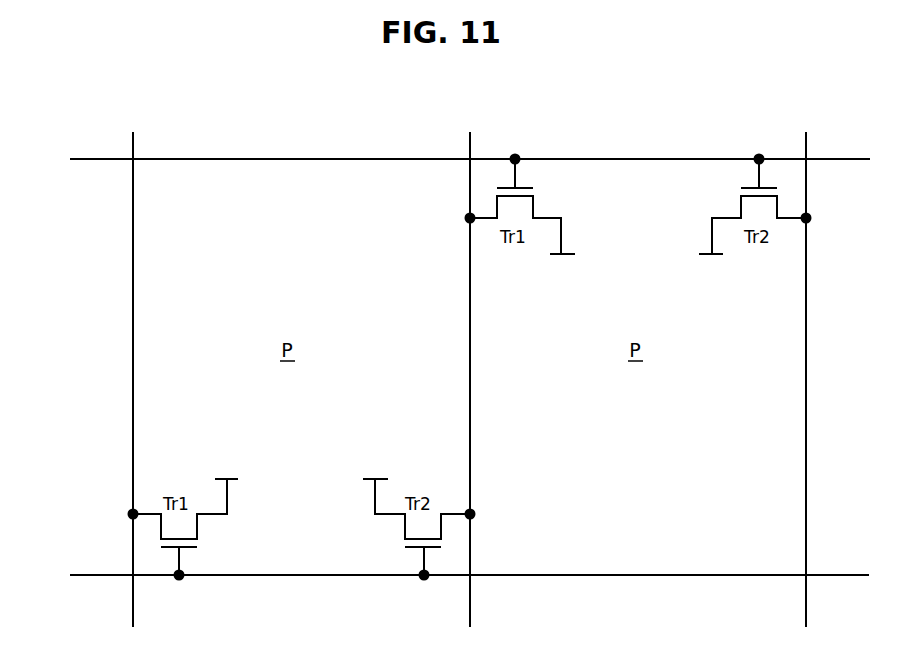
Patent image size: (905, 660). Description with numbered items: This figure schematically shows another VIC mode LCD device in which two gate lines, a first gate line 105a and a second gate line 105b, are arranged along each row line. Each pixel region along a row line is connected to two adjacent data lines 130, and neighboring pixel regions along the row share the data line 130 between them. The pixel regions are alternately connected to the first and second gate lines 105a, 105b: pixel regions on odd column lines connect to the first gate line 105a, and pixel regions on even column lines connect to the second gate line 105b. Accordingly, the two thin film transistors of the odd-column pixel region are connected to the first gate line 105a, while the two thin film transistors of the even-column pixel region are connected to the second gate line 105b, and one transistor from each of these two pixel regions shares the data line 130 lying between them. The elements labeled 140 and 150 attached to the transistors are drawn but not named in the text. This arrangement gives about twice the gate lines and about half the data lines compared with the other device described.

The data line 130 is at (469, 366).
The first gate line 105a is at (443, 575).
The second gate line 105b is at (443, 158).
The first pixel electrode / liquid crystal capacitor 140 is at (395, 366).
The second pixel electrode / liquid crystal capacitor 150 is at (544, 366).